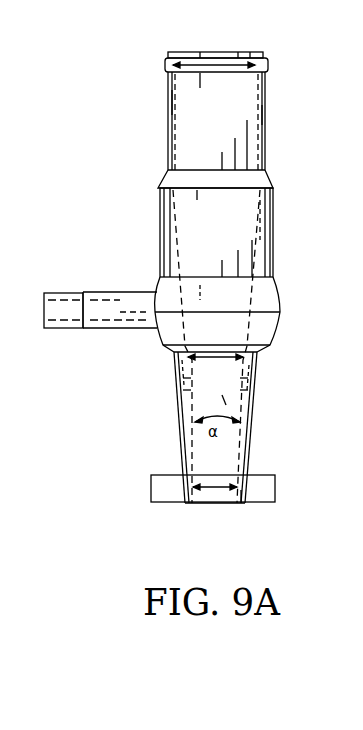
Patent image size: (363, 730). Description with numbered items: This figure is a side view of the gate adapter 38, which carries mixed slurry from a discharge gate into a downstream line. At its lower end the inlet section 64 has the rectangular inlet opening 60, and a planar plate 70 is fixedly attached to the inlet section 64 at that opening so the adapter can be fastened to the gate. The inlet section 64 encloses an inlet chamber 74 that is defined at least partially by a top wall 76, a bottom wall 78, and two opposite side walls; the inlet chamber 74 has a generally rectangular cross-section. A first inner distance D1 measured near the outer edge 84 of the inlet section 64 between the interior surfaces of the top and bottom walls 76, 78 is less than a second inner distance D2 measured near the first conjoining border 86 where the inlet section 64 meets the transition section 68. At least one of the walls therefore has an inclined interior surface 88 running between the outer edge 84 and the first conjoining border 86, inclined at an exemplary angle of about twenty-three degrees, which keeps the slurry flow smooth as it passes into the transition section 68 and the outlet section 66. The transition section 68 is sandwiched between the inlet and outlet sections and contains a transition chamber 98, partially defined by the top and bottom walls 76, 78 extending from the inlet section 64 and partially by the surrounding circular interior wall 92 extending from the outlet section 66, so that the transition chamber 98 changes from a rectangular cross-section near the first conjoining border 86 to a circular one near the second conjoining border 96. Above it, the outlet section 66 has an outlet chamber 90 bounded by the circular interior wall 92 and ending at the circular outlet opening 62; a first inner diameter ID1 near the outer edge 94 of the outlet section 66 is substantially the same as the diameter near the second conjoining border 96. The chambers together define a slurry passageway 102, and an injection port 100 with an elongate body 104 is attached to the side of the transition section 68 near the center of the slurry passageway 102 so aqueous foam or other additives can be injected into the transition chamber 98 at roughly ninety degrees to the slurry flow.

The first inner diameter ID1 is at (200, 65).
The circular outlet opening 62 is at (217, 50).
The outer edge 94 is at (265, 53).
The gate adapter 38 is at (265, 90).
The surrounding circular interior wall 92 is at (172, 105).
The outlet chamber 90 is at (227, 115).
The outlet section 66 is at (195, 128).
The second conjoining border 96 is at (265, 170).
The transition section 68 is at (172, 245).
The transition chamber 98 is at (230, 238).
The slurry passageway 102 is at (207, 293).
The first conjoining border 86 is at (260, 357).
The second inner distance D2 is at (222, 360).
The injection port 100 is at (98, 328).
The elongate body 104 is at (115, 312).
The bottom wall 78 is at (187, 373).
The top wall 76 is at (262, 378).
The inclined interior surface 88 is at (258, 393).
The inlet chamber 74 is at (223, 400).
The inlet section 64 is at (183, 428).
The planar plate 70 is at (150, 490).
The first inner distance D1 is at (202, 488).
The rectangular inlet opening 60 is at (222, 502).
The outer edge 84 is at (247, 502).